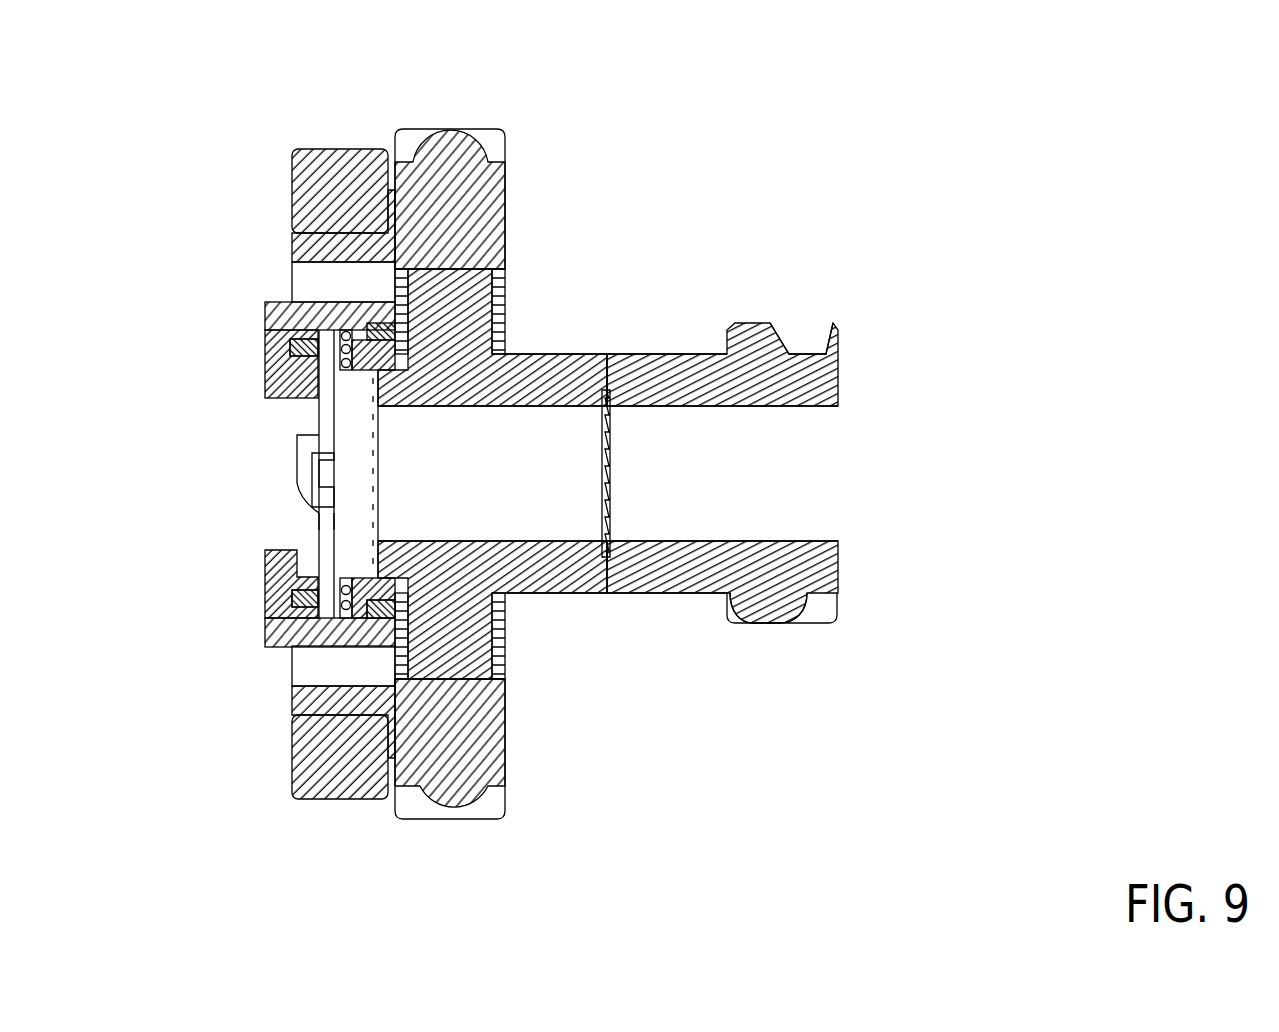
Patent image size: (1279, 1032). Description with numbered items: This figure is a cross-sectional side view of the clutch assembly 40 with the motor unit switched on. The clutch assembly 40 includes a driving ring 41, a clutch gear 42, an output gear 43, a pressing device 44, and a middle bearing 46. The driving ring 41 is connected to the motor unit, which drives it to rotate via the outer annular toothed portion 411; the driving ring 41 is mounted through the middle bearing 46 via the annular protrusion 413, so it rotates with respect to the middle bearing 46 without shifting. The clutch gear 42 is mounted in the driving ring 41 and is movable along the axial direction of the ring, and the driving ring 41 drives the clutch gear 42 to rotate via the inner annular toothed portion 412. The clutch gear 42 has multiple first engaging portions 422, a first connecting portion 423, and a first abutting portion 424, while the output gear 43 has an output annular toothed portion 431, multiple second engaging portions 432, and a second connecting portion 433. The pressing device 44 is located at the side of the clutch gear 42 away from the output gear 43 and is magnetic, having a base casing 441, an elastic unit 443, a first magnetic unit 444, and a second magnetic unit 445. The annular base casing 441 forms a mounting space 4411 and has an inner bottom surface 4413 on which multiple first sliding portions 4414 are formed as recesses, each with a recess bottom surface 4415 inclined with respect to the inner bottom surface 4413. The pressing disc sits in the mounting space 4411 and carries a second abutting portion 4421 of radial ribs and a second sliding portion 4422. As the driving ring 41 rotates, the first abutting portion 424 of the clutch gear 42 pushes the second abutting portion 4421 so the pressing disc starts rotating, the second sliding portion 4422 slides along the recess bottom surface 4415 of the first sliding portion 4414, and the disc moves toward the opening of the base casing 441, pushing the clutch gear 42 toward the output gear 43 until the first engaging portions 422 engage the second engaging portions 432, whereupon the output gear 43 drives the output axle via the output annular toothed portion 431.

The clutch assembly 40 is at (158, 80).
The driving ring 41 is at (515, 203).
The outer annular toothed portion 411 is at (440, 178).
The inner annular toothed portion 412 is at (505, 290).
The annular protrusion 413 is at (325, 245).
The middle bearing 46 is at (335, 180).
The clutch gear 42 is at (515, 348).
The first engaging portions 422 is at (602, 475).
The first connecting portion 423 is at (562, 572).
The first abutting portion 424 is at (378, 470).
The output gear 43 is at (720, 350).
The output annular toothed portion 431 is at (768, 580).
The second engaging portions 432 is at (610, 475).
The second connecting portion 433 is at (673, 572).
The pressing device 44 is at (252, 392).
The base casing 441 is at (292, 632).
The elastic unit 443 is at (323, 599).
The first magnetic unit 444 is at (350, 320).
The second magnetic unit 445 is at (340, 338).
The mounting space 4411 is at (323, 562).
The inner bottom surface 4413 is at (320, 370).
The first sliding portion 4414 is at (303, 450).
The recess bottom surface 4415 is at (303, 490).
The second abutting portion 4421 is at (375, 527).
The second sliding portion 4422 is at (323, 468).